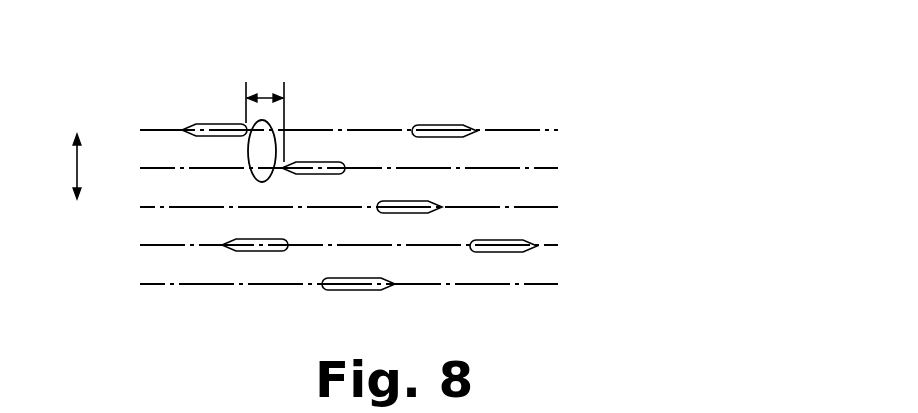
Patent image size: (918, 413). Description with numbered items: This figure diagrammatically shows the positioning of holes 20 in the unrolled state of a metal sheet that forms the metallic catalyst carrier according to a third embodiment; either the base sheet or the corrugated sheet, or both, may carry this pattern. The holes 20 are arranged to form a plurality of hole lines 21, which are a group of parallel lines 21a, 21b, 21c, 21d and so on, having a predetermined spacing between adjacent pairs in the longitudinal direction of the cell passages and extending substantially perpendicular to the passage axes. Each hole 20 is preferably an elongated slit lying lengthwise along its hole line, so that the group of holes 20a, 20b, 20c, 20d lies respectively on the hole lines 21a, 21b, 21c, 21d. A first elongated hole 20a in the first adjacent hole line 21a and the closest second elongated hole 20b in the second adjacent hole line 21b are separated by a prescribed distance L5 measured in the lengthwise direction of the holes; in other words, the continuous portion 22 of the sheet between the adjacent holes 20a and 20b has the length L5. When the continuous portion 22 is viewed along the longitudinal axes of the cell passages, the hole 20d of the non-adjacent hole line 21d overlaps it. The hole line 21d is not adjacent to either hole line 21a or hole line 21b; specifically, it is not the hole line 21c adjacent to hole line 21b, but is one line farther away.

The holes 20 is at (382, 42).
The first elongated hole 20a is at (199, 121).
The second elongated hole 20b is at (330, 160).
The hole 20c is at (377, 209).
The hole 20d is at (257, 252).
The hole lines 21 is at (687, 105).
The first adjacent hole line 21a is at (557, 130).
The second adjacent hole line 21b is at (557, 168).
The hole line 21c is at (557, 207).
The non-adjacent hole line 21d is at (557, 245).
The continuous portion 22 is at (252, 177).
The prescribed distance L5 is at (262, 97).